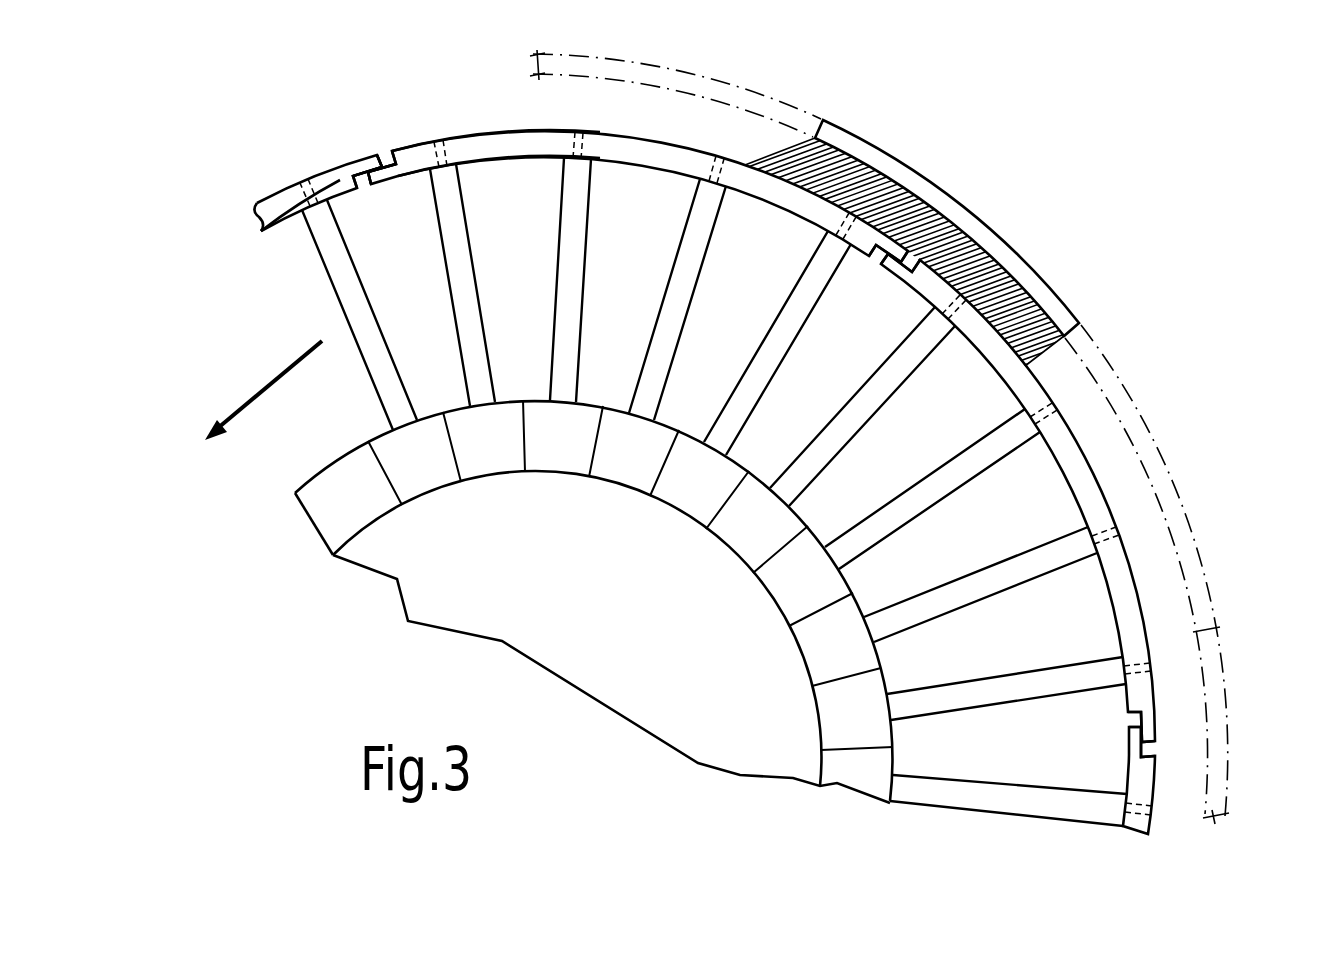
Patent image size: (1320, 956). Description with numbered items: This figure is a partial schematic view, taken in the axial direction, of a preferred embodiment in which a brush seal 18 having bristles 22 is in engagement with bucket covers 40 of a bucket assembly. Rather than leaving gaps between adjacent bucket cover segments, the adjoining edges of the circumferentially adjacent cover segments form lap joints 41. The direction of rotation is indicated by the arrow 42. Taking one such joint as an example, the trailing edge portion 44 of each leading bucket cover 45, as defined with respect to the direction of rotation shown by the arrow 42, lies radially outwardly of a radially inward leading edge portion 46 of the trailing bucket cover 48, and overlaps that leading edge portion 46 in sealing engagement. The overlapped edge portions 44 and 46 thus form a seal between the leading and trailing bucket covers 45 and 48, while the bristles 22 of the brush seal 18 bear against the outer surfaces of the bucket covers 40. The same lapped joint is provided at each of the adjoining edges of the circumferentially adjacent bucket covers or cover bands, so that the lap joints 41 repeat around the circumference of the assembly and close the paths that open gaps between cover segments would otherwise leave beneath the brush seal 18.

The brush seal 18 is at (947, 184).
The bristles 22 is at (787, 152).
The bucket covers 40 is at (338, 173).
The lap joints 41 is at (391, 138).
The arrow 42 is at (252, 350).
The trailing edge portion 44 is at (356, 158).
The leading bucket cover 45 is at (290, 193).
The leading edge portion 46 is at (378, 178).
The trailing bucket cover 48 is at (478, 148).